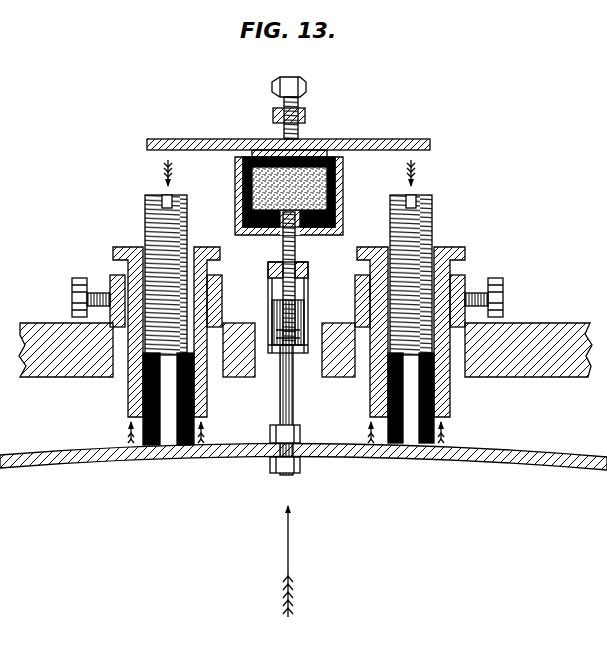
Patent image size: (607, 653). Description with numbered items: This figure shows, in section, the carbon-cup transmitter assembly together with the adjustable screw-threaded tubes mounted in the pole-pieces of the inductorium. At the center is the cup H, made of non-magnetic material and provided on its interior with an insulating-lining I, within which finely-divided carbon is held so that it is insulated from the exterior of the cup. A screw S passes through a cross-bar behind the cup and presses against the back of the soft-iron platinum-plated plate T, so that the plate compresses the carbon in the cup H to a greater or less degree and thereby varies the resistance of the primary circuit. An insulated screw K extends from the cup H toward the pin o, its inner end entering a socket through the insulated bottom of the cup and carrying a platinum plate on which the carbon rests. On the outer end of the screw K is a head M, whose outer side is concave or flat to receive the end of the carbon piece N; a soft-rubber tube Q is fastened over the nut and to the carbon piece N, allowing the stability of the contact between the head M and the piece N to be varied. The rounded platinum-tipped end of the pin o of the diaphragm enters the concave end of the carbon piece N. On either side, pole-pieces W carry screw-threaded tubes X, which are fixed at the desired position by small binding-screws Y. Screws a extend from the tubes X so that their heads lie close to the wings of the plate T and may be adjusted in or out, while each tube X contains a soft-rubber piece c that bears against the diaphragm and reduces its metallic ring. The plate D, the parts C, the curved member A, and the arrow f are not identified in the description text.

The soft-iron platinum-plated plate T is at (288, 135).
The screw S is at (295, 108).
The cup H is at (346, 188).
The insulating-lining I is at (344, 176).
The insulated screw K is at (299, 256).
The pole-pieces W is at (110, 277).
The binding-screws Y is at (282, 297).
The base plate D is at (47, 374).
The screw-threaded tubes X is at (134, 245).
The screws a is at (186, 250).
The inserts C is at (288, 399).
The soft-rubber piece c is at (131, 418).
The soft-rubber tube Q is at (266, 285).
The head M is at (306, 296).
The carbon piece N is at (286, 332).
The pin o is at (294, 417).
The curved plate A is at (64, 456).
The direction arrow f is at (291, 561).